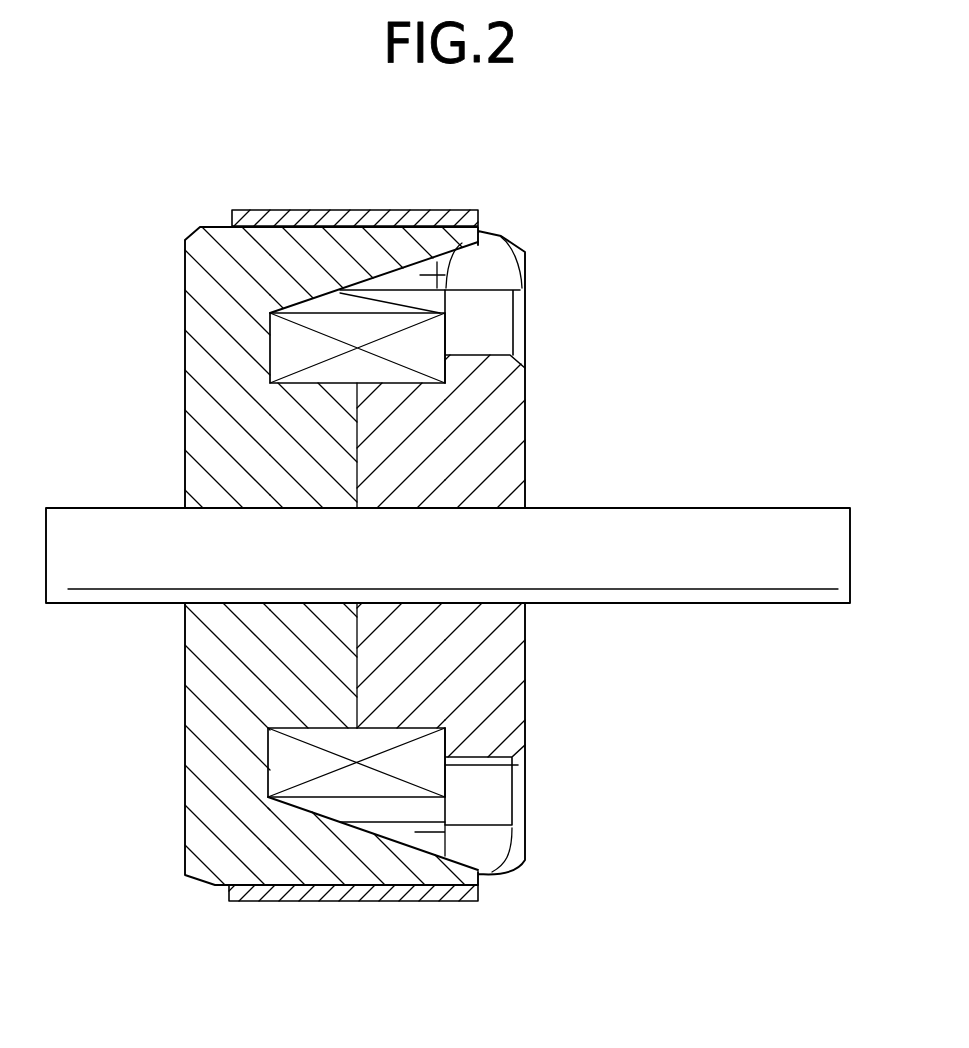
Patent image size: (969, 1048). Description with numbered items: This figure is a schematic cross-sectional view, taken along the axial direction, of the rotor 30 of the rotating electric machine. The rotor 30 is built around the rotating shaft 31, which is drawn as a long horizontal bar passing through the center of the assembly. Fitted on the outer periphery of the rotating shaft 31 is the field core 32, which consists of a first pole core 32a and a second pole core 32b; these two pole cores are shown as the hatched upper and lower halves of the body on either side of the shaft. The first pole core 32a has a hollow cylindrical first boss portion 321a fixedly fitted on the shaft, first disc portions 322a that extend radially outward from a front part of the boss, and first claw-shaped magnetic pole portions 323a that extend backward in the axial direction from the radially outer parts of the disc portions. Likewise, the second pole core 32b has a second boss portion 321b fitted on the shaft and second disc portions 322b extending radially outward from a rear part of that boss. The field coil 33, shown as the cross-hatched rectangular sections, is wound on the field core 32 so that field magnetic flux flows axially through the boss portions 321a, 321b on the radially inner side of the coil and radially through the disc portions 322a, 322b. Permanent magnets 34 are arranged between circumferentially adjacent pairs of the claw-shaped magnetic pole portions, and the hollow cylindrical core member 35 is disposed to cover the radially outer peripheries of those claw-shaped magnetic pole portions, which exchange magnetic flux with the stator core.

The rotor 30 is at (375, 500).
The rotating shaft 31 is at (727, 543).
The field core 32 is at (444, 744).
The first pole core 32a is at (287, 650).
The second pole core 32b is at (440, 710).
The field coil 33 is at (300, 765).
The permanent magnet 34 is at (445, 288).
The core member 35 is at (270, 210).
The first boss portion 321a is at (300, 450).
The second boss portion 321b is at (460, 445).
The first disc portion 322a is at (228, 353).
The second disc portion 322b is at (470, 330).
The first claw-shaped magnetic pole portion 323a is at (300, 263).